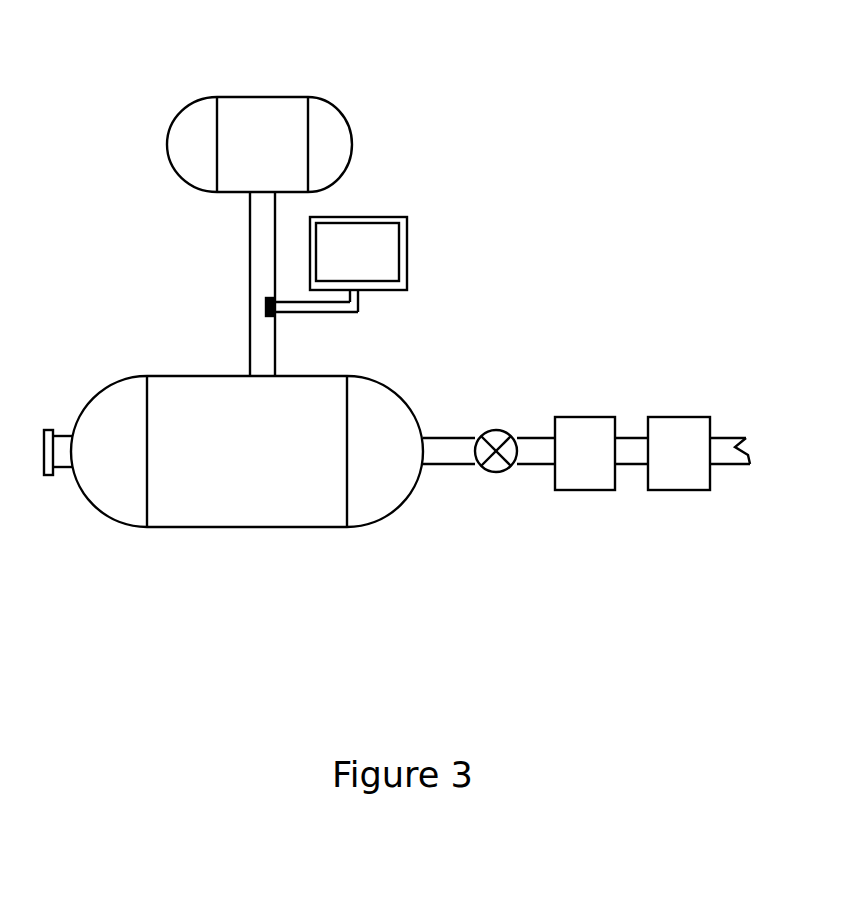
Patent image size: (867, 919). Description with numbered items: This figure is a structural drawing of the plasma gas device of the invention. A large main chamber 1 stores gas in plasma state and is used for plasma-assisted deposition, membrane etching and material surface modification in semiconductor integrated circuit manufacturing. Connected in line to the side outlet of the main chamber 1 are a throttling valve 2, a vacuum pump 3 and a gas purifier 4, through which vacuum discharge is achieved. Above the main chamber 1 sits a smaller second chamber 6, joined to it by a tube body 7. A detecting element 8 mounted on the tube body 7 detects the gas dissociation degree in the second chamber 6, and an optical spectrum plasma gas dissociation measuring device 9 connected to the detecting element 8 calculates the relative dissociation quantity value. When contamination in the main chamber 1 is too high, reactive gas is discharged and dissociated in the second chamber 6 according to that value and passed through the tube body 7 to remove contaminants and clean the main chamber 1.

The main chamber 1 is at (277, 527).
The throttling valve 2 is at (495, 428).
The vacuum pump 3 is at (593, 417).
The gas purifier 4 is at (683, 425).
The second chamber 6 is at (186, 119).
The tube body 7 is at (253, 230).
The detecting element 8 is at (270, 302).
The optical spectrum plasma gas dissociation measuring device 9 is at (407, 233).